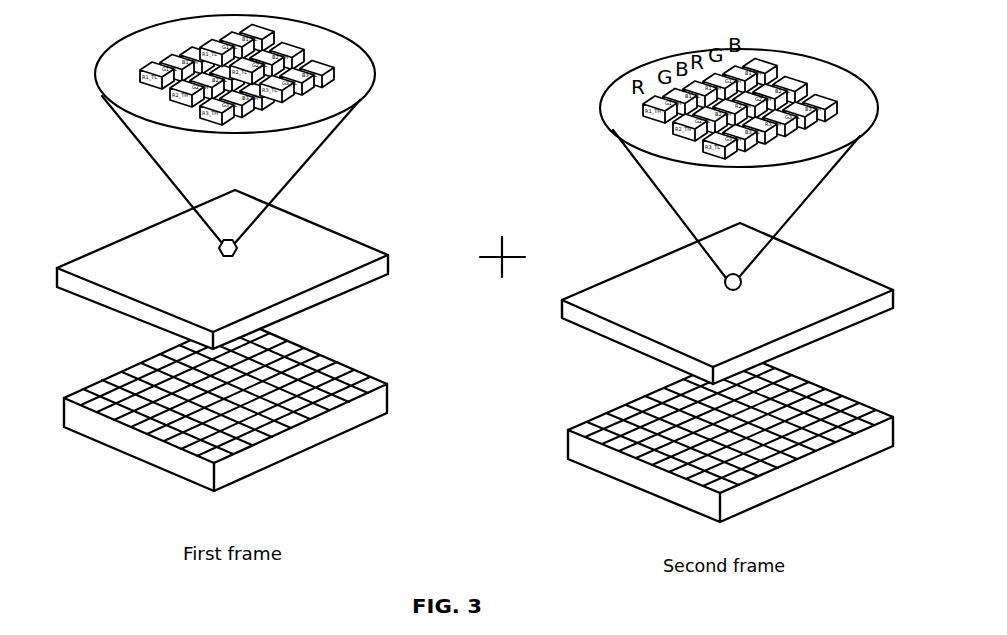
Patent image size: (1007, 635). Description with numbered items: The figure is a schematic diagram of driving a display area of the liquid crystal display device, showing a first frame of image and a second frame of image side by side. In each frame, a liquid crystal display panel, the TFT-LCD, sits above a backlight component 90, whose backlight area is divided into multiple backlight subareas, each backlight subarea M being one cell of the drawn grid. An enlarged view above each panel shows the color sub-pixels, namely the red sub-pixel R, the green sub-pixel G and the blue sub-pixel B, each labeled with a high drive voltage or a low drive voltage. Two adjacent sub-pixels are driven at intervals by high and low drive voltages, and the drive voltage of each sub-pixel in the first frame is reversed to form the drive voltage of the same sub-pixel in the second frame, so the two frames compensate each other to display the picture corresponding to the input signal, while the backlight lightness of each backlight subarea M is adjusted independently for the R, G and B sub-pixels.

The backlight component 90 is at (163, 469).
The backlight subarea M is at (280, 425).
The liquid crystal display device TFT-LCD is at (201, 269).
The red sub-pixel R is at (210, 74).
The green sub-pixel G is at (232, 68).
The blue sub-pixel B is at (252, 58).